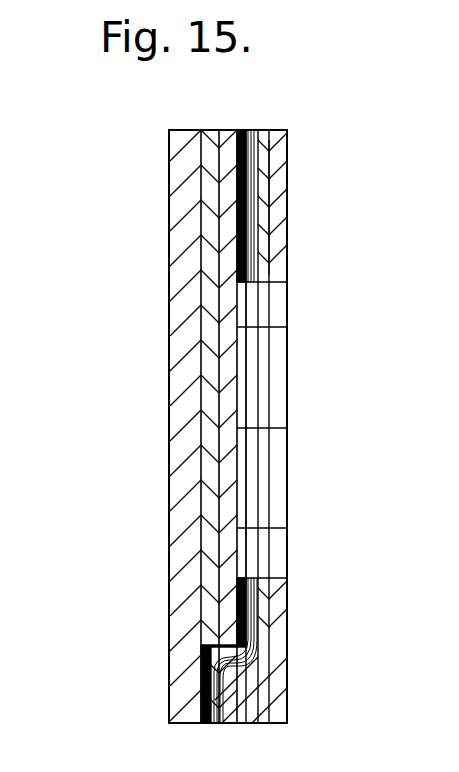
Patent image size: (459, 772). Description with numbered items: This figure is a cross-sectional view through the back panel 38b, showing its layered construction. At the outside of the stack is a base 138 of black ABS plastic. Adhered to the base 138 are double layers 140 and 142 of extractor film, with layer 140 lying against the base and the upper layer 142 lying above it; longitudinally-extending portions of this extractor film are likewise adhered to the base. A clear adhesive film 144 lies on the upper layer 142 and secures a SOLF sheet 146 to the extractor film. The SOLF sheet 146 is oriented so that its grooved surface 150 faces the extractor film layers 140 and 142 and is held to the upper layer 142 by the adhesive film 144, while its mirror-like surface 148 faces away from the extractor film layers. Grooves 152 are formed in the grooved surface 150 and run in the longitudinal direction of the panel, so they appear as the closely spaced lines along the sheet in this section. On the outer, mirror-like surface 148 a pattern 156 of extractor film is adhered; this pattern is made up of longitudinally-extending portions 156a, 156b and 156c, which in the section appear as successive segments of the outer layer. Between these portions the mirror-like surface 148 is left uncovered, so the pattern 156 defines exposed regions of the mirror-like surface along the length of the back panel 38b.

The back panel 38b is at (130, 631).
The base 138 is at (166, 162).
The extractor film layer 140 is at (207, 215).
The upper layer of extractor film 142 is at (228, 472).
The clear adhesive film 144 is at (246, 279).
The SOLF sheet 146 is at (265, 120).
The mirror-like surface 148 is at (273, 240).
The grooved surface 150 is at (230, 163).
The grooves 152 is at (252, 128).
The pattern of extractor film 156 is at (305, 426).
The longitudinally-extending portion 156a is at (273, 470).
The longitudinally-extending portion 156b is at (283, 316).
The longitudinally-extending portion 156c is at (283, 268).